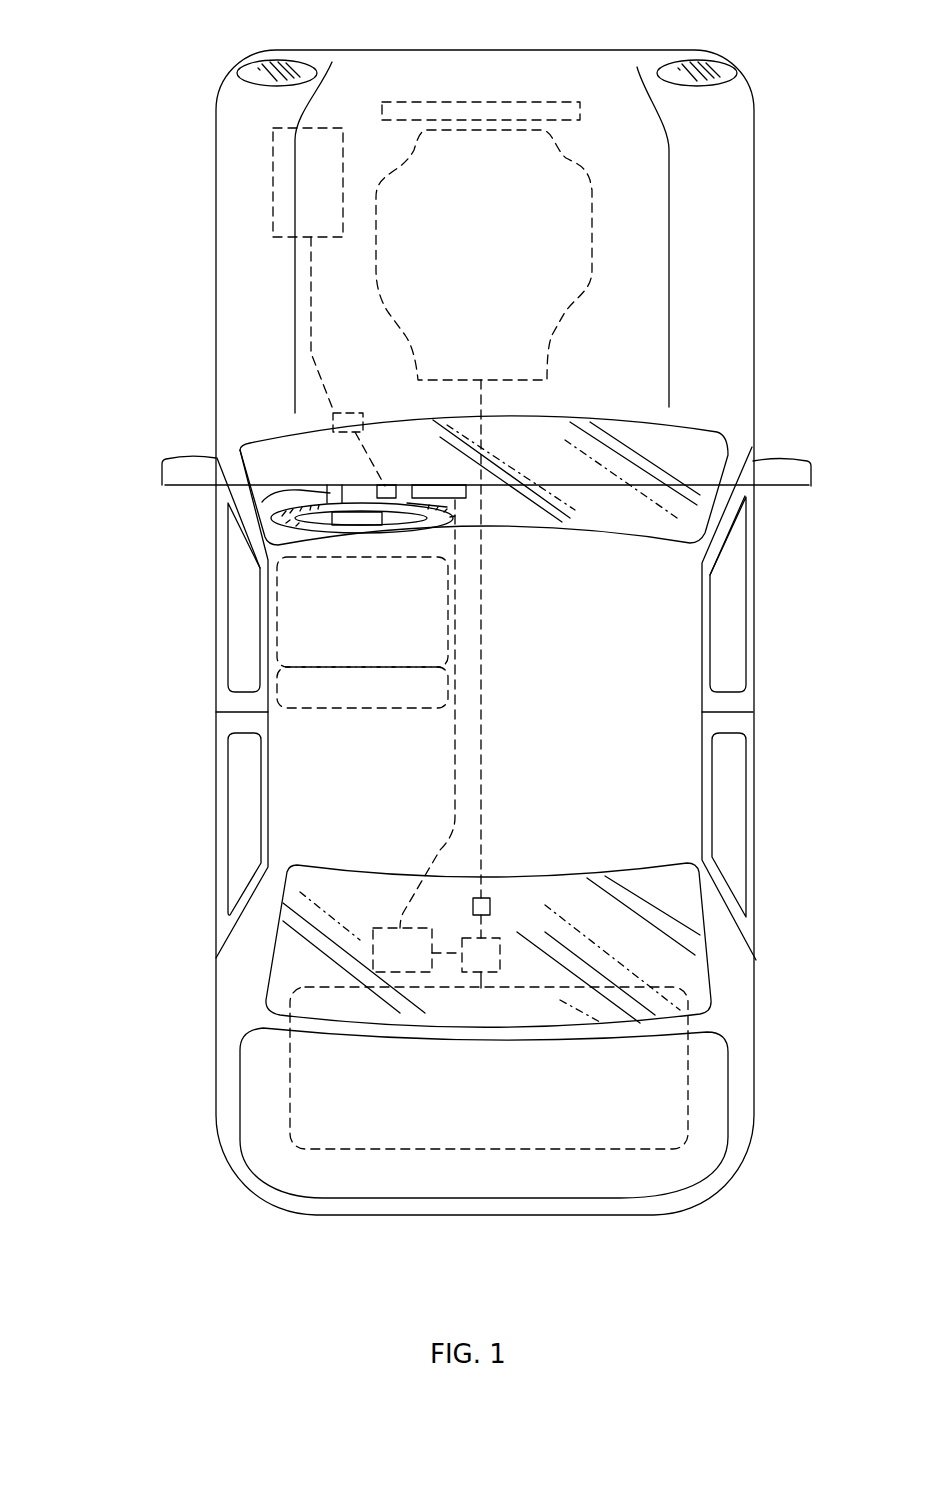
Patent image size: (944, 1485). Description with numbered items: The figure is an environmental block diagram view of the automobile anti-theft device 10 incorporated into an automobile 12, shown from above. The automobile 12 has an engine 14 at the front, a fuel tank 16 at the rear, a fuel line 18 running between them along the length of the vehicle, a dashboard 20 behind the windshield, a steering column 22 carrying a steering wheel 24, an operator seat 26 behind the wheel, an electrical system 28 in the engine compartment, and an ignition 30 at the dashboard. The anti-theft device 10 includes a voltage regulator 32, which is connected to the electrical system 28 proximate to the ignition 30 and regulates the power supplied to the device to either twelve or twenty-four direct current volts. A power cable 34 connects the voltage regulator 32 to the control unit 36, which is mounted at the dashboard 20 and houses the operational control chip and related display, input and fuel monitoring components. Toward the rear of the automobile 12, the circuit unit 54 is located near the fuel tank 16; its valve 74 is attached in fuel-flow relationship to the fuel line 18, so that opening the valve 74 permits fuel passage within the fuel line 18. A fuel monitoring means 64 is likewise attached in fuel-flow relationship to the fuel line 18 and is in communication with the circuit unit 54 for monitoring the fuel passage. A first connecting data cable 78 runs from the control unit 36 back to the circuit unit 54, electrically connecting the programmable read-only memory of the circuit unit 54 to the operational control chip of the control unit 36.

The automobile anti-theft device 10 is at (188, 599).
The automobile 12 is at (756, 159).
The engine 14 is at (533, 130).
The fuel tank 16 is at (690, 1114).
The fuel line 18 is at (482, 753).
The dashboard 20 is at (547, 462).
The steering column 22 is at (325, 503).
The steering wheel 24 is at (268, 538).
The operator seat 26 is at (377, 706).
The electrical system 28 is at (312, 318).
The ignition 30 is at (378, 490).
The voltage regulator 32 is at (333, 424).
The power cable 34 is at (427, 486).
The control unit 36 is at (462, 492).
The circuit unit 54 is at (373, 942).
The fuel monitoring means 64 is at (493, 908).
The valve 74 is at (502, 958).
The first connecting data cable 78 is at (456, 762).